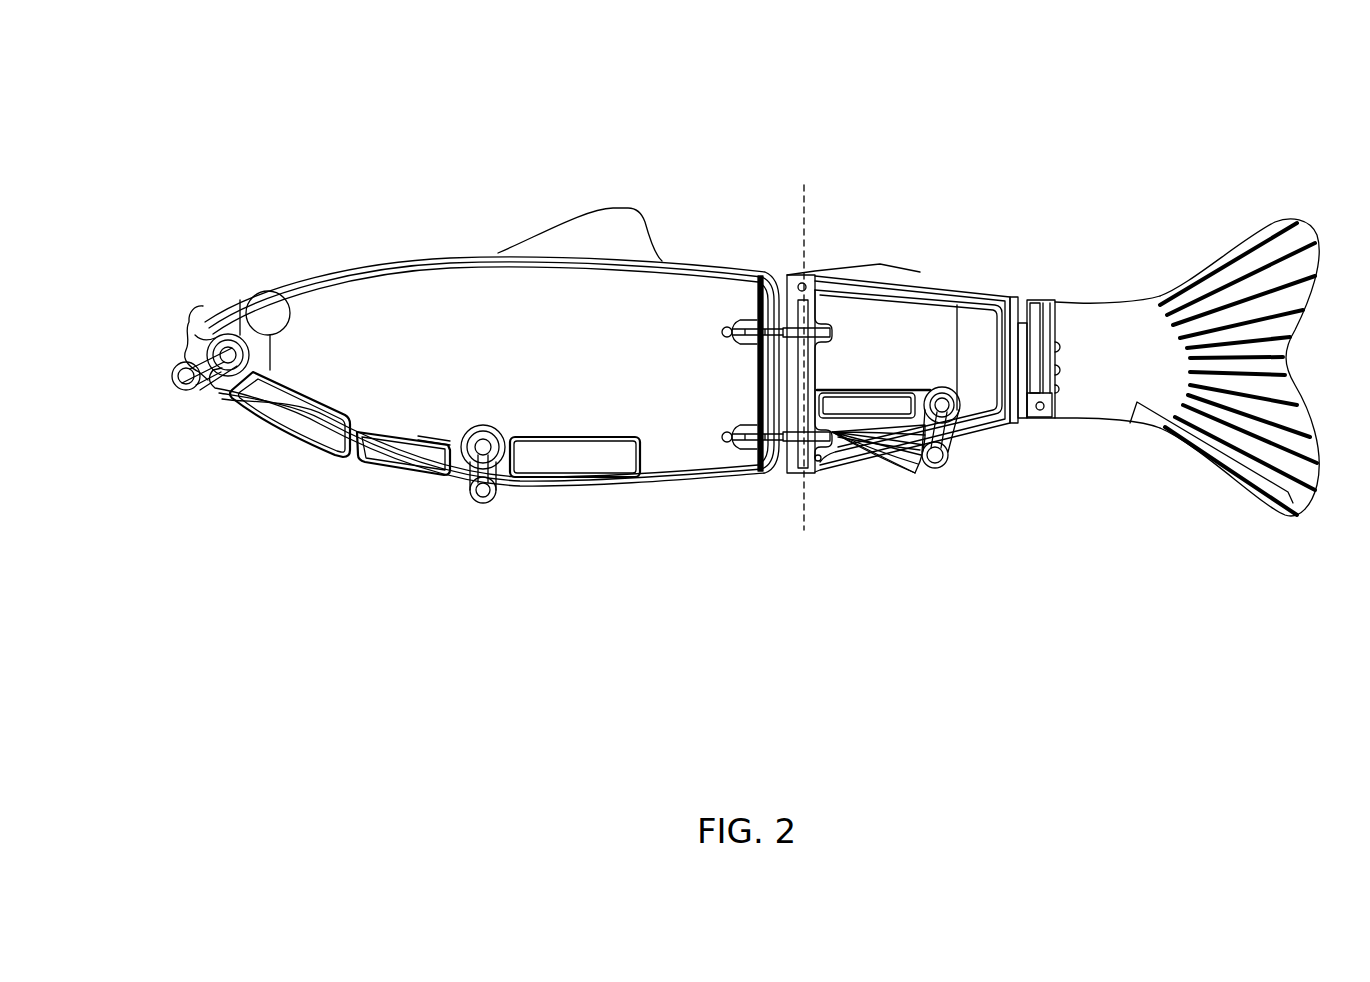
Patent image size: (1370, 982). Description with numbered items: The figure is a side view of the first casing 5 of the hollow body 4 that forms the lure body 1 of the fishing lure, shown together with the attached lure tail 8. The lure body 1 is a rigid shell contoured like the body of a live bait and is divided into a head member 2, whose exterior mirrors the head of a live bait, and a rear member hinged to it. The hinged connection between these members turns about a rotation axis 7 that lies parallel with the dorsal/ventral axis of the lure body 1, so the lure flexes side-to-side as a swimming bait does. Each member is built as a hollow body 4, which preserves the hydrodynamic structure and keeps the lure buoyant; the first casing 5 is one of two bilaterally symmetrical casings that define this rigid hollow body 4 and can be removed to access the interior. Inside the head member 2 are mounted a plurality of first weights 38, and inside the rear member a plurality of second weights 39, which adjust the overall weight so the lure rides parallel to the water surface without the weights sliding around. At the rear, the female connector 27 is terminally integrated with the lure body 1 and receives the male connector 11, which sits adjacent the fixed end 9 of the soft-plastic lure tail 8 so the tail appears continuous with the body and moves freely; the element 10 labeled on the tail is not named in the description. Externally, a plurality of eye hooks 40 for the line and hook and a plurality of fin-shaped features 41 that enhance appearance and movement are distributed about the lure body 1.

The lure body 1 is at (460, 232).
The head member 2 is at (330, 250).
The hollow body 4 is at (270, 278).
The first casing 5 is at (225, 295).
The rotation axis 7 is at (806, 185).
The lure tail 8 is at (1140, 278).
The fixed end 9 is at (1077, 305).
The tail fin 10 is at (1272, 220).
The male connector 11 is at (1022, 300).
The female connector 27 is at (985, 300).
The plurality of first weights 38 is at (320, 415).
The plurality of second weights 39 is at (862, 398).
The plurality of eye hooks 40 is at (175, 390).
The plurality of fin-shaped features 41 is at (620, 207).